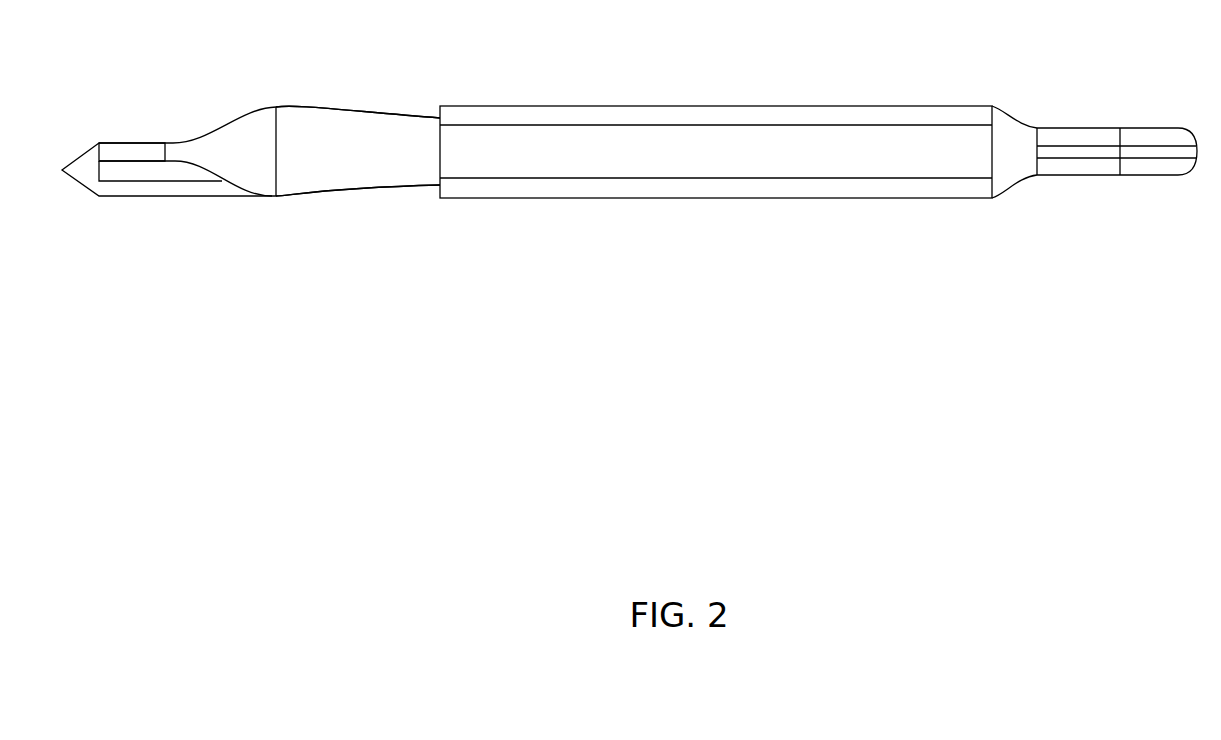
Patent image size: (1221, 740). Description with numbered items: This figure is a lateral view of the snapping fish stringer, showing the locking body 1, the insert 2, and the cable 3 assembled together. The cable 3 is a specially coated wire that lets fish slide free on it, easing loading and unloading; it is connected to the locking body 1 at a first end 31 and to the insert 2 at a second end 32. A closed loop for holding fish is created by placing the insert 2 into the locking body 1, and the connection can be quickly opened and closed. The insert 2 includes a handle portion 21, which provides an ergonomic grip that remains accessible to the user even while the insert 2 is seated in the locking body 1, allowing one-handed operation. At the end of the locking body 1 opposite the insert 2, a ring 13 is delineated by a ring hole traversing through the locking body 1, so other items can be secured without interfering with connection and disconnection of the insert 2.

The locking body 1 is at (820, 78).
The ring 13 is at (1105, 155).
The insert 2 is at (375, 91).
The handle portion 21 is at (403, 127).
The cable 3 is at (110, 123).
The first end 31 is at (405, 192).
The second end 32 is at (149, 152).